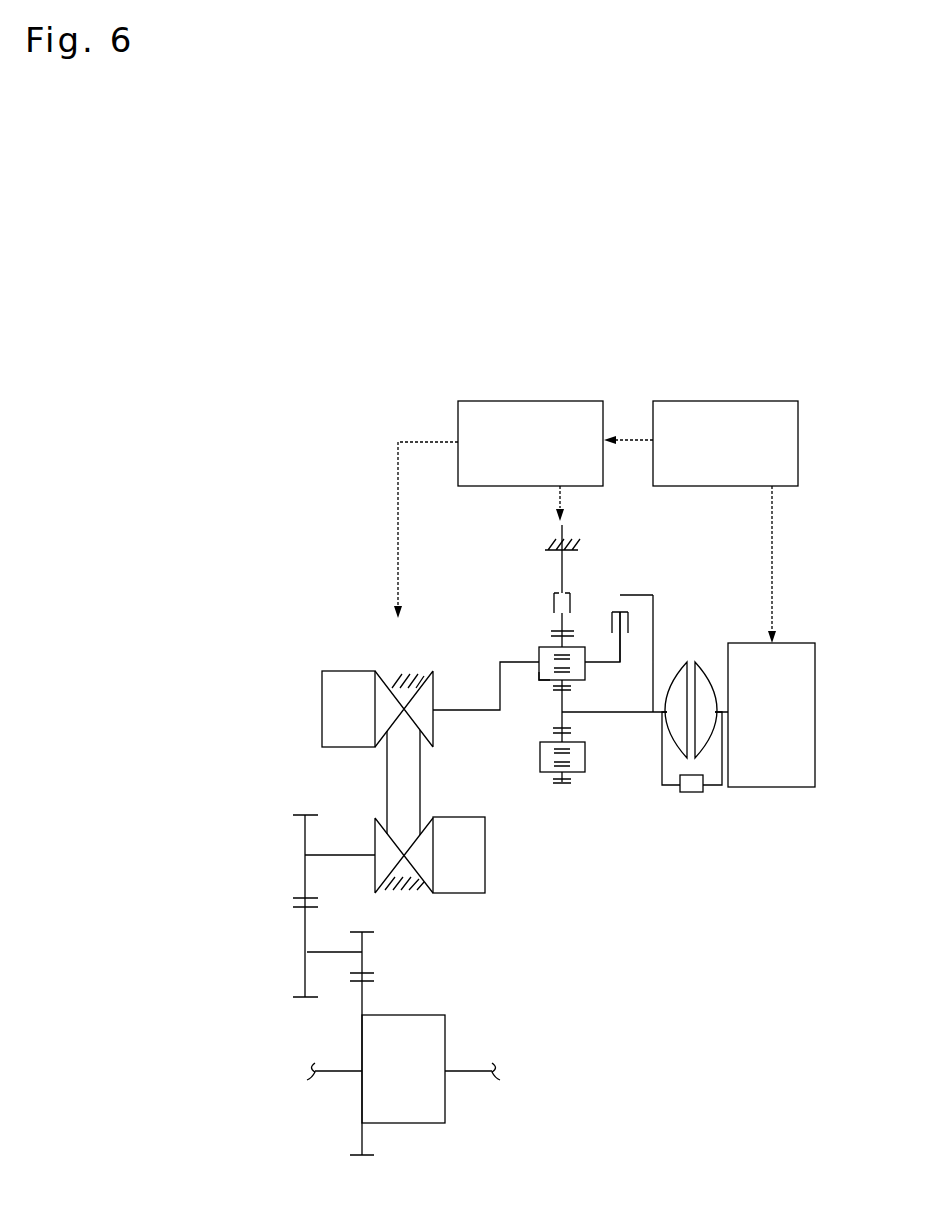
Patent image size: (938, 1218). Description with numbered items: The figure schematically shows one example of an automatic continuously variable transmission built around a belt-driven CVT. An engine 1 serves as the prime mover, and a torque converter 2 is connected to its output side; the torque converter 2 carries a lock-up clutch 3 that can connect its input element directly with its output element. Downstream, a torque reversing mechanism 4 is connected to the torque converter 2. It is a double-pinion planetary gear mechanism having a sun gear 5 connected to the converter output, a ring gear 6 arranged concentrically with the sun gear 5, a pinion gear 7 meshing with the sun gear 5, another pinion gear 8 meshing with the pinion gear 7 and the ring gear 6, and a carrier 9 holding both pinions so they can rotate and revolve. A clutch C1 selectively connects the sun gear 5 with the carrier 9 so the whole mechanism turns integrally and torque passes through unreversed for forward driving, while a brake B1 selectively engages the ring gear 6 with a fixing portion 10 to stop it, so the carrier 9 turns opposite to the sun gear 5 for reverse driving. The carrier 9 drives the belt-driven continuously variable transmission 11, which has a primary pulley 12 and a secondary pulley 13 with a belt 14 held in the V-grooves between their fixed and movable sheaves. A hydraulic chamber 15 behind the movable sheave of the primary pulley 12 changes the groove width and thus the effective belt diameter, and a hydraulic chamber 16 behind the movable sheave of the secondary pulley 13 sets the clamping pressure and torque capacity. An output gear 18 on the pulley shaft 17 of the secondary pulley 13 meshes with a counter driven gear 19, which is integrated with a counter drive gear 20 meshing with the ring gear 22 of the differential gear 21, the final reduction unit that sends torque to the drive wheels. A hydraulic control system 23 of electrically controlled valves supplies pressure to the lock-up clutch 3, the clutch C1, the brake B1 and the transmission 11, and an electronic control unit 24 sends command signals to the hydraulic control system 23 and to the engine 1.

The engine 1 is at (815, 675).
The torque converter 2 is at (704, 644).
The lock-up clutch 3 is at (692, 793).
The torque reversing mechanism 4 is at (602, 792).
The sun gear 5 is at (575, 734).
The ring gear 6 is at (556, 632).
The pinion gear 7 is at (575, 688).
The pinion gear 8 is at (569, 633).
The carrier 9 is at (539, 681).
The fixing portion 10 is at (543, 548).
The belt-driven continuously variable transmission 11 is at (365, 770).
The primary pulley 12 is at (439, 657).
The secondary pulley 13 is at (368, 870).
The belt 14 is at (386, 777).
The hydraulic chamber 15 is at (347, 677).
The hydraulic chamber 16 is at (481, 817).
The pulley shaft 17 is at (347, 854).
The output gear 18 is at (300, 818).
The counter driven gear 19 is at (297, 910).
The counter drive gear 20 is at (375, 940).
The differential gear 21 is at (435, 1012).
The ring gear 22 is at (357, 985).
The hydraulic control system 23 is at (590, 408).
The electronic control unit 24 is at (776, 408).
The brake B1 is at (574, 588).
The clutch C1 is at (614, 603).